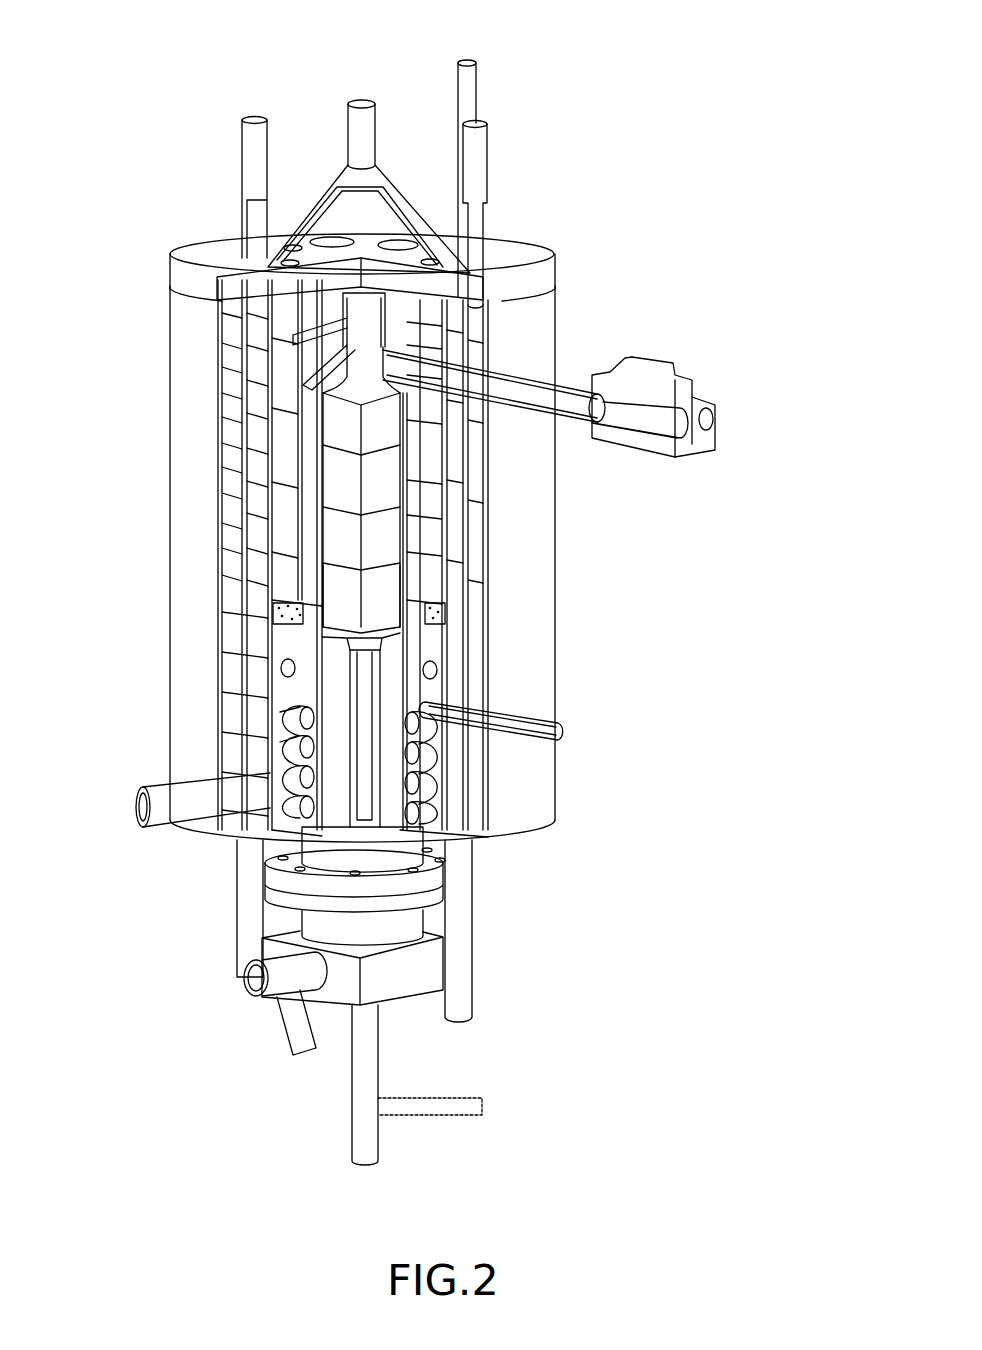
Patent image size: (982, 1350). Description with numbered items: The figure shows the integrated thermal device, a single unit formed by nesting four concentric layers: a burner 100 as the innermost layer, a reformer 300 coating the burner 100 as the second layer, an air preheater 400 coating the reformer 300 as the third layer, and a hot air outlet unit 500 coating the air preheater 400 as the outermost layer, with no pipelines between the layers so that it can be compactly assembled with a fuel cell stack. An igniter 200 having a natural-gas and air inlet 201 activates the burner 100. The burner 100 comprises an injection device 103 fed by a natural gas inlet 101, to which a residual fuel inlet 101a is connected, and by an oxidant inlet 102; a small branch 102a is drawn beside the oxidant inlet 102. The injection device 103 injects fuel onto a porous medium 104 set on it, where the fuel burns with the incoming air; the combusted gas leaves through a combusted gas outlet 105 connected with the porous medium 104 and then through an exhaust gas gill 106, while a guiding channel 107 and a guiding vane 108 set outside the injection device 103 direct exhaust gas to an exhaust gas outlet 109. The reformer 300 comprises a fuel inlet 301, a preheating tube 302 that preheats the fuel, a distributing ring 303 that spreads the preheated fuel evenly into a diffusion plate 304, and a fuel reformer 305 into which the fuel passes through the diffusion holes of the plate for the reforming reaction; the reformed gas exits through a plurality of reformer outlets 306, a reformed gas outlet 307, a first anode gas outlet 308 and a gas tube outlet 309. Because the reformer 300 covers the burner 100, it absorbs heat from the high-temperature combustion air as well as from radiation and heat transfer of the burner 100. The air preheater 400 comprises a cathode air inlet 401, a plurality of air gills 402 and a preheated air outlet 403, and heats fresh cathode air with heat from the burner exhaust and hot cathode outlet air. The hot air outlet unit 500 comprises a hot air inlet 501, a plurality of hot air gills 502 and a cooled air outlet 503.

The burner 100 is at (363, 417).
The natural gas inlet 101 is at (365, 1145).
The residual fuel inlet 101a is at (462, 1105).
The oxidant inlet 102 is at (255, 978).
The small branch pipe 102a is at (293, 1030).
The injection device 103 is at (363, 643).
The porous medium 104 is at (362, 577).
The combusted gas outlet 105 is at (363, 300).
The exhaust gas gill 106 is at (297, 338).
The guiding channel 107 is at (412, 628).
The guiding vane 108 is at (280, 740).
The exhaust gas outlet 109 is at (163, 797).
The igniter 200 is at (680, 427).
The natural-gas and air inlet 201 is at (707, 420).
The reformer 300 is at (323, 298).
The fuel inlet 301 is at (542, 732).
The preheating tube 302 is at (423, 810).
The distributing ring 303 is at (435, 668).
The diffusion plate 304 is at (273, 610).
The fuel reformer 305 is at (283, 510).
The reformer outlets 306 is at (333, 240).
The reformed gas outlet 307 is at (360, 127).
The first anode gas outlet 308 is at (470, 75).
The gas tube outlet 309 is at (477, 853).
The air preheater 400 is at (253, 370).
The cathode air inlet 401 is at (460, 980).
The air gills 402 is at (253, 453).
The preheated air outlet 403 is at (250, 152).
The hot air outlet unit 500 is at (233, 342).
The hot air inlet 501 is at (475, 145).
The hot air gills 502 is at (232, 405).
The cooled air outlet 503 is at (250, 898).